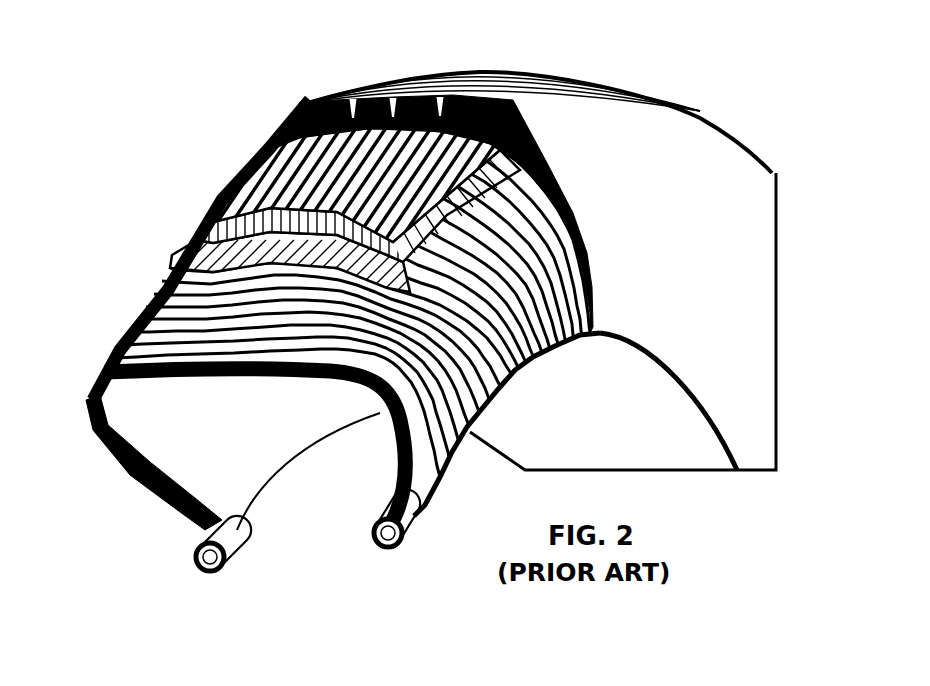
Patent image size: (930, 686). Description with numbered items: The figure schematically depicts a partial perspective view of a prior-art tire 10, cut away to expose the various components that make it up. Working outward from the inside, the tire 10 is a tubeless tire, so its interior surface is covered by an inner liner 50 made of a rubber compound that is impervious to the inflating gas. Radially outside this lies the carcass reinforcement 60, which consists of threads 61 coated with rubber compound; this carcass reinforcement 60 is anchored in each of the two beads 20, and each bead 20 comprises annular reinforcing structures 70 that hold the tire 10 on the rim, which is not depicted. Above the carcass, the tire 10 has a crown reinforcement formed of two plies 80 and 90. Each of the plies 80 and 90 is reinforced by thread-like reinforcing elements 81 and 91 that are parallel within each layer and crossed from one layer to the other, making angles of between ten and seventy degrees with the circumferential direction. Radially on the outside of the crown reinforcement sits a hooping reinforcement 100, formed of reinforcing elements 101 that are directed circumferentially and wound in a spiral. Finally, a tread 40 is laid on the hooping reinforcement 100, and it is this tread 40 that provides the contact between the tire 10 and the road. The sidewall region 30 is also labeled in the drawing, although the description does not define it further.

The tire 10 is at (403, 291).
The beads 20 is at (360, 503).
The sidewall 30 is at (618, 237).
The tread 40 is at (345, 97).
The inner liner 50 is at (224, 441).
The carcass reinforcement 60 is at (261, 373).
The threads 61 is at (157, 320).
The annular reinforcing structures 70 is at (373, 537).
The ply 80 is at (292, 285).
The thread-like reinforcing elements 81 is at (206, 240).
The ply 90 is at (307, 237).
The thread-like reinforcing elements 91 is at (238, 190).
The hooping reinforcement 100 is at (336, 192).
The reinforcing elements 101 is at (310, 167).